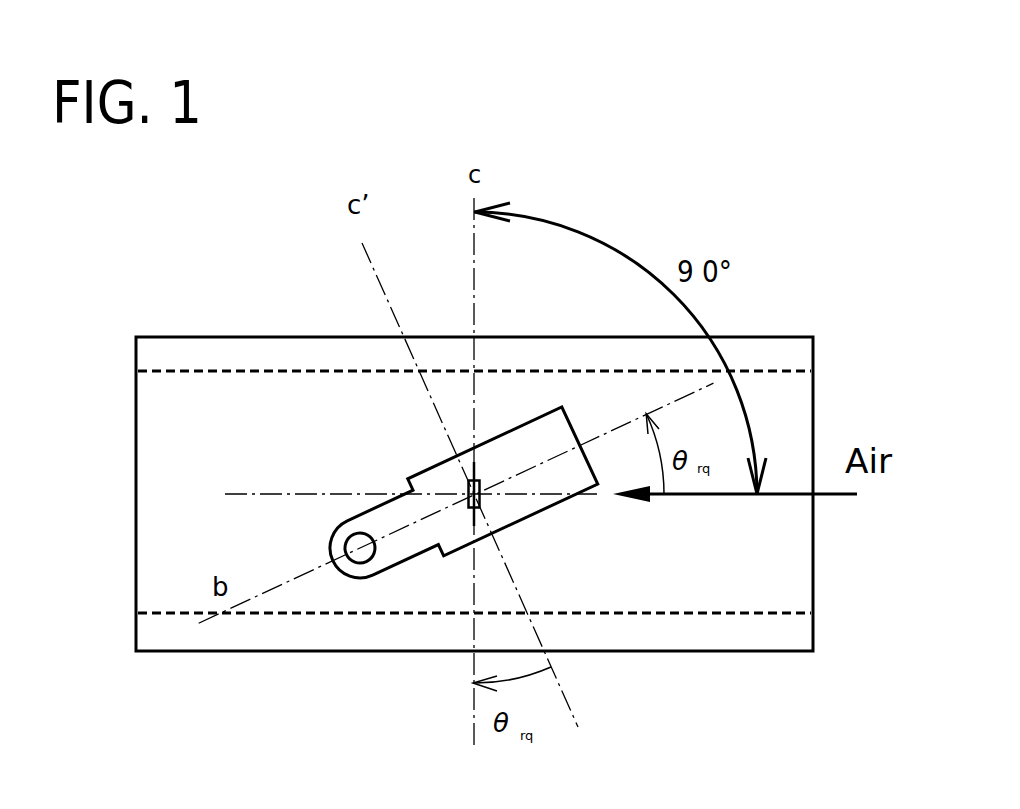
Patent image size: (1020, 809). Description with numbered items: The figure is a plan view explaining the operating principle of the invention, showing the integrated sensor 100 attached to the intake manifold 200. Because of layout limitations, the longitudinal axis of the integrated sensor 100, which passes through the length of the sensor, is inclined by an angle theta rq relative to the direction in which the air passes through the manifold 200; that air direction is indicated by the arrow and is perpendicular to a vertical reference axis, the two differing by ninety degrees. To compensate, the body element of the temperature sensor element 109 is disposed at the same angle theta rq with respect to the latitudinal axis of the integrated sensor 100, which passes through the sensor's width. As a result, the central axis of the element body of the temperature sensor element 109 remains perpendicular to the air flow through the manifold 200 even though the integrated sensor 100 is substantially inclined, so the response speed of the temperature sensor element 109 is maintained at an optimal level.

The intake manifold 200 is at (224, 404).
The integrated sensor 100 is at (586, 522).
The temperature sensor element 109 is at (488, 504).